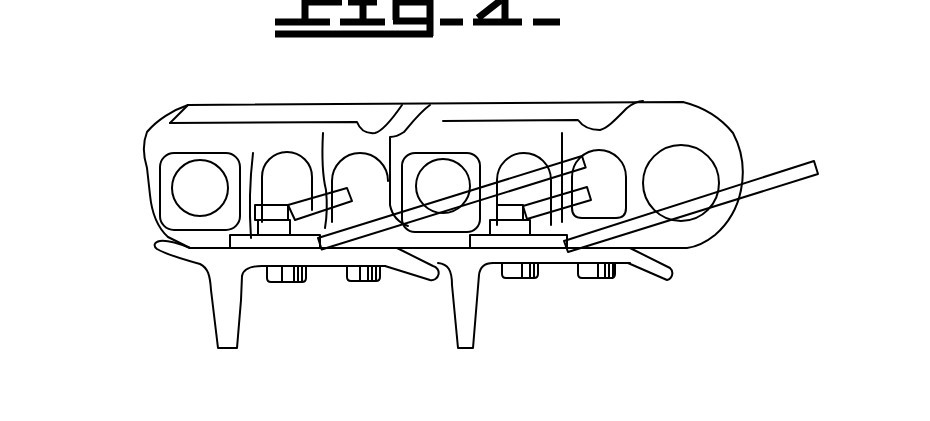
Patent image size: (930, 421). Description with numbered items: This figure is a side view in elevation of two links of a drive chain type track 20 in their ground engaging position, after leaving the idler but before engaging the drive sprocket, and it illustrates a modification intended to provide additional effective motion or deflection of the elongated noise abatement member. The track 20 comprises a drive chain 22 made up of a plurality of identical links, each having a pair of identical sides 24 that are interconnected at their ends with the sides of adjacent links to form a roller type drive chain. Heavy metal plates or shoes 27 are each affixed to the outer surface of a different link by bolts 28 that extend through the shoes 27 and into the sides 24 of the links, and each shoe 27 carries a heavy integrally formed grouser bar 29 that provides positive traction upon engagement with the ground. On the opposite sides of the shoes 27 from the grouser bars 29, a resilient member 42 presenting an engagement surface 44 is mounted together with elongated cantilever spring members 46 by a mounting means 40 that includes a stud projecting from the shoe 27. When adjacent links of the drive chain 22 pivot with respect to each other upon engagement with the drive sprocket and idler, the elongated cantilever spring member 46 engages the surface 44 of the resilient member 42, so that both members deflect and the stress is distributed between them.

The track 20 is at (711, 78).
The drive chain 22 is at (131, 179).
The sides 24 is at (208, 131).
The shoes 27 is at (263, 259).
The bolts 28 is at (357, 283).
The grouser bar 29 is at (222, 326).
The mounting means 40 is at (253, 137).
The resilient member 42 is at (321, 205).
The engagement surface 44 is at (323, 155).
The elongated cantilever spring members 46 is at (440, 203).